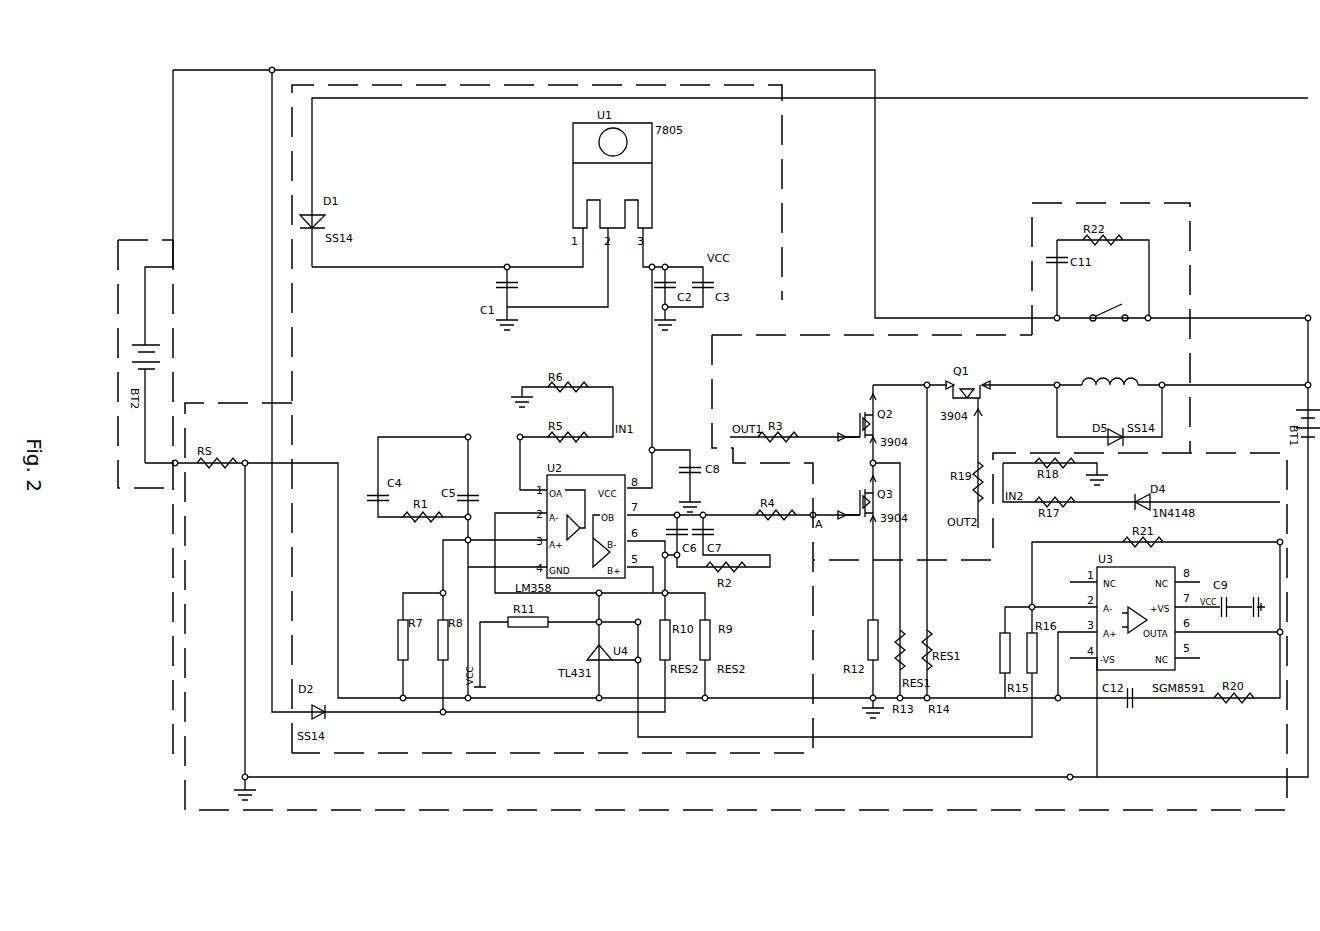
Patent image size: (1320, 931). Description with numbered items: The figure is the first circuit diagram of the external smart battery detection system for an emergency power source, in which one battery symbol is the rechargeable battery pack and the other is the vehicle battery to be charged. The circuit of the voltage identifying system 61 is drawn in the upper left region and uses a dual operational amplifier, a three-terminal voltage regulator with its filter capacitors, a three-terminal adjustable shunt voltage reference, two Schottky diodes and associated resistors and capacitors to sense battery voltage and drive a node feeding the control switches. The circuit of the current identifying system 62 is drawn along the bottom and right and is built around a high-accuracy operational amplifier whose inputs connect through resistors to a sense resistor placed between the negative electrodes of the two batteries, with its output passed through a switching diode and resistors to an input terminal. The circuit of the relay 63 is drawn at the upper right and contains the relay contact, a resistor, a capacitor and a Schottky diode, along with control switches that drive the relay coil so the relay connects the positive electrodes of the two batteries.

The circuit of voltage identifying system 61 is at (767, 85).
The circuit of current identifying system 62 is at (1220, 809).
The circuit of relay 63 is at (1157, 203).